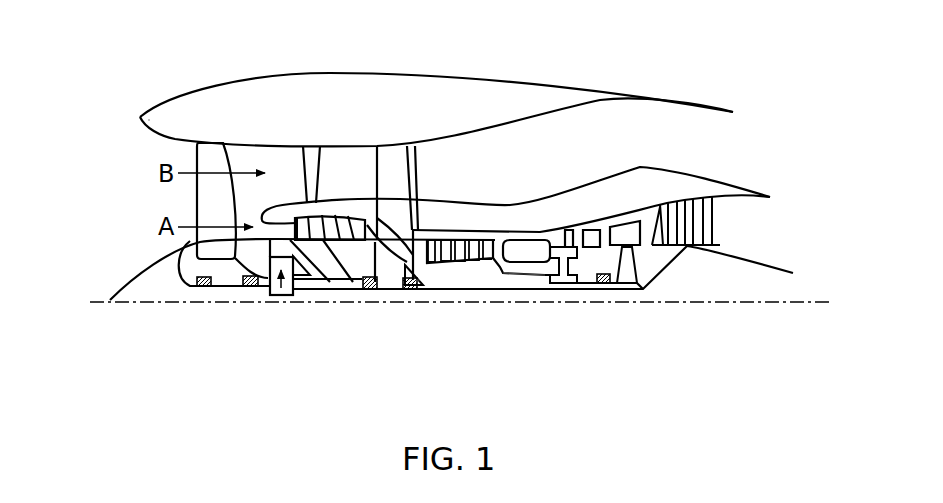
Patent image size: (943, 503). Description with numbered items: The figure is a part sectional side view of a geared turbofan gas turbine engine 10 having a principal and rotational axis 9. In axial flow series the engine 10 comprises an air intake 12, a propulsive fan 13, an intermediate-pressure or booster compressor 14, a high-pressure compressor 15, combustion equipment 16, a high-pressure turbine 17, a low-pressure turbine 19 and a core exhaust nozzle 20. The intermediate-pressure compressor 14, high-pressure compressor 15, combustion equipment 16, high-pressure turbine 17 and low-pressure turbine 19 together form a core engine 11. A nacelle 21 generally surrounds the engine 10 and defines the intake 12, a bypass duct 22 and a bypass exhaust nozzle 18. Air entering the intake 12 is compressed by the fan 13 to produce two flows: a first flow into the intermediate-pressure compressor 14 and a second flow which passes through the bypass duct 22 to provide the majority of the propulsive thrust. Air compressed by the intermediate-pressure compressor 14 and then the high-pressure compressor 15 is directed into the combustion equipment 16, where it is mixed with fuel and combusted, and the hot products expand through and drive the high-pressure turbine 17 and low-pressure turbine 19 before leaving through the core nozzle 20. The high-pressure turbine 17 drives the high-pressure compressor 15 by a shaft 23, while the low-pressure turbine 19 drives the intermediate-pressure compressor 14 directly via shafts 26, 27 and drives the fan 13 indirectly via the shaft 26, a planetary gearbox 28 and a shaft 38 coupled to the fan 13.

The principal and rotational axis 9 is at (690, 303).
The geared turbofan gas turbine engine 10 is at (177, 92).
The core engine 11 is at (515, 213).
The air intake 12 is at (150, 140).
The propulsive fan 13 is at (207, 202).
The intermediate-pressure compressor 14 is at (340, 222).
The high-pressure compressor 15 is at (461, 232).
The combustion equipment 16 is at (533, 252).
The high-pressure turbine 17 is at (582, 232).
The bypass exhaust nozzle 18 is at (703, 129).
The low-pressure turbine 19 is at (693, 198).
The core exhaust nozzle 20 is at (755, 222).
The nacelle 21 is at (410, 84).
The bypass duct 22 is at (623, 149).
The shaft 23 is at (540, 278).
The shaft 26 is at (457, 292).
The shaft 27 is at (332, 263).
The gearbox 28 is at (280, 297).
The shaft 38 is at (217, 288).